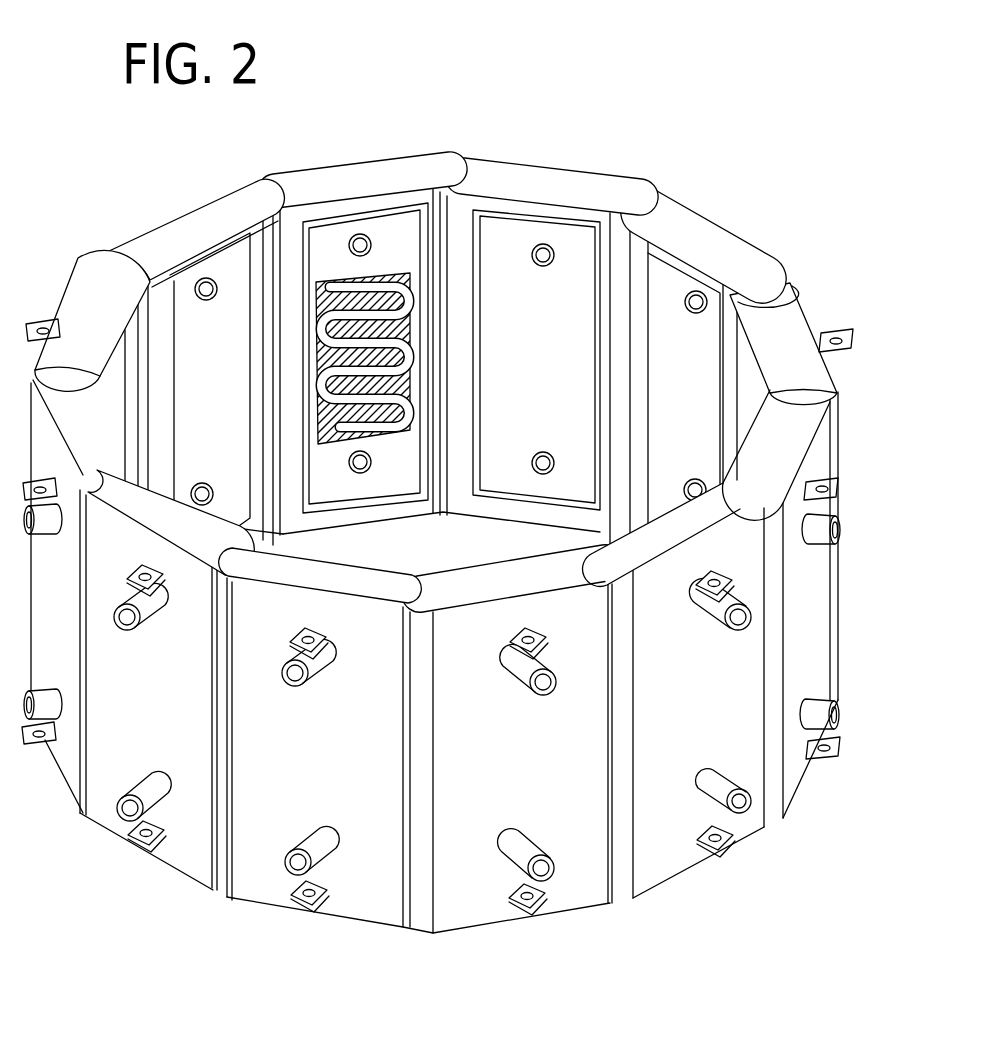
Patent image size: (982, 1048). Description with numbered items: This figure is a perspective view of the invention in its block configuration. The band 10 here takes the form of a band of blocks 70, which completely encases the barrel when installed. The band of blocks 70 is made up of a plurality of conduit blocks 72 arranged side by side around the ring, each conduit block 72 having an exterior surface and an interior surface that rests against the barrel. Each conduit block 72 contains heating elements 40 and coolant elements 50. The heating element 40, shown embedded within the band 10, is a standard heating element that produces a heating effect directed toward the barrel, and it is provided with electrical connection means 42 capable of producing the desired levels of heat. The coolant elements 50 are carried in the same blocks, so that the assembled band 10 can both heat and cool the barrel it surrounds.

The band 10 is at (600, 127).
The heating element 40 is at (388, 322).
The electrical connection means 42 is at (297, 631).
The coolant element 50 is at (557, 688).
The band of blocks 70 is at (722, 218).
The conduit block 72 is at (752, 257).